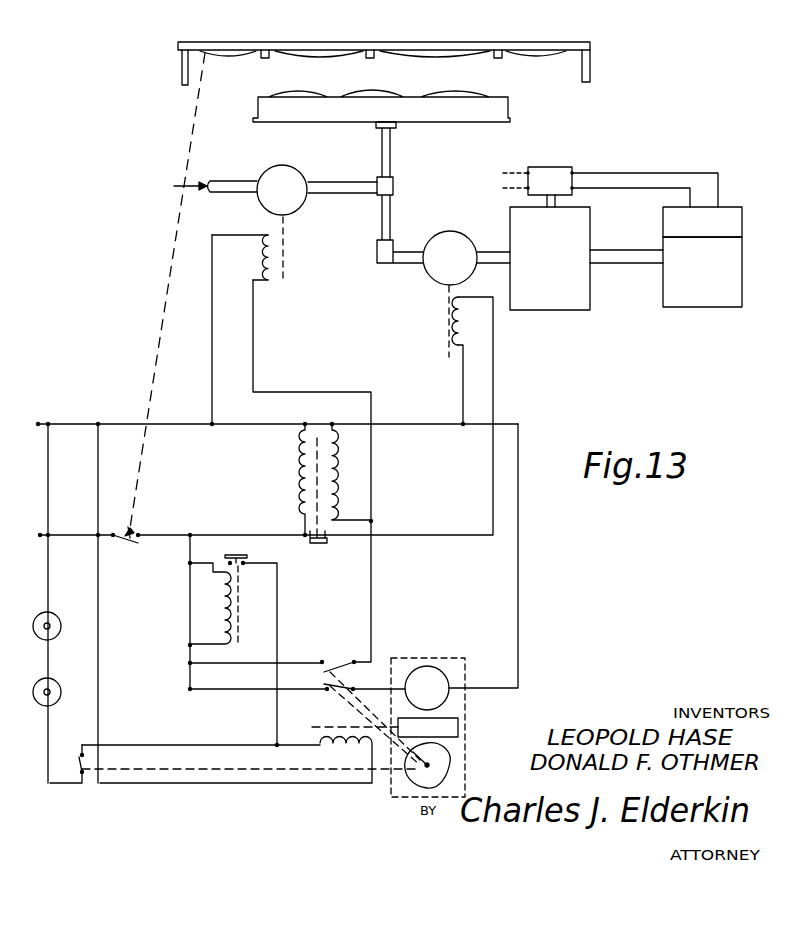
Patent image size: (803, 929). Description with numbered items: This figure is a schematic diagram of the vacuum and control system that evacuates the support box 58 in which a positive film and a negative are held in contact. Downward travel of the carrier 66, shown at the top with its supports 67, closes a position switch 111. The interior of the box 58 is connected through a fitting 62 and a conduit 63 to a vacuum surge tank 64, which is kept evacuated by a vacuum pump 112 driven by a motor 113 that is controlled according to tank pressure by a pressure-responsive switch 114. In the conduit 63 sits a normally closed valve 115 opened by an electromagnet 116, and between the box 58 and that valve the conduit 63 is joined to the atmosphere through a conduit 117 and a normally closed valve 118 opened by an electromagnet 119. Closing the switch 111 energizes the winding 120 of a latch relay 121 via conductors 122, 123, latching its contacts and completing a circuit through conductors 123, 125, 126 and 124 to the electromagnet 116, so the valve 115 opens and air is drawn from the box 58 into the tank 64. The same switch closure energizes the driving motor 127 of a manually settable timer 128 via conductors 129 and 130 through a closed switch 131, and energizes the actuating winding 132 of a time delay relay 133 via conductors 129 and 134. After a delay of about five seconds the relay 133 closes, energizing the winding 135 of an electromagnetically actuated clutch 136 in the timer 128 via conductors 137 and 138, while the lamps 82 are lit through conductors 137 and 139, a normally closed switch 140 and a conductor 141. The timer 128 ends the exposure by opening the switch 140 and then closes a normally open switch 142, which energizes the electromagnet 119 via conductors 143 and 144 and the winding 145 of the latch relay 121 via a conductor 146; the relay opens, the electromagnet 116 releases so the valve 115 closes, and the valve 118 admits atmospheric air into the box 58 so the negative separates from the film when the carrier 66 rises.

The support box 58 is at (508, 104).
The fitting 62 is at (394, 130).
The conduit 63 is at (390, 215).
The vacuum surge tank 64 is at (578, 305).
The carrier 66 is at (196, 41).
The support leg 67 is at (183, 62).
The lamps 82 is at (46, 678).
The position switch 111 is at (147, 519).
The vacuum pump 112 is at (677, 303).
The motor 113 is at (663, 221).
The pressure-responsive switch 114 is at (548, 175).
The normally closed valve 115 is at (441, 237).
The electromagnet 116 is at (455, 322).
The conduit 117 is at (344, 190).
The normally closed valve 118 is at (290, 175).
The electromagnet 119 is at (266, 257).
The winding 120 is at (305, 471).
The latch relay 121 is at (305, 511).
The conductor 122 is at (96, 533).
The conductor 123 is at (287, 527).
The conductor 124 is at (305, 428).
The conductor 125 is at (420, 533).
The conductor 126 is at (463, 356).
The driving motor 127 is at (422, 666).
The manually settable timer 128 is at (390, 783).
The conductor 129 is at (188, 549).
The conductor 130 is at (518, 634).
The switch 131 is at (335, 692).
The actuating winding 132 is at (223, 591).
The time delay relay 133 is at (245, 566).
The conductor 134 is at (212, 472).
The winding 135 is at (350, 740).
The electromagnetically actuated clutch 136 is at (458, 726).
The conductor 137 is at (283, 598).
The conductor 138 is at (100, 632).
The conductor 139 is at (246, 743).
The normally closed switch 140 is at (78, 762).
The conductor 141 is at (48, 738).
The normally open switch 142 is at (338, 657).
The conductor 143 is at (278, 648).
The conductor 144 is at (253, 323).
The winding 145 is at (335, 486).
The conductor 146 is at (352, 520).